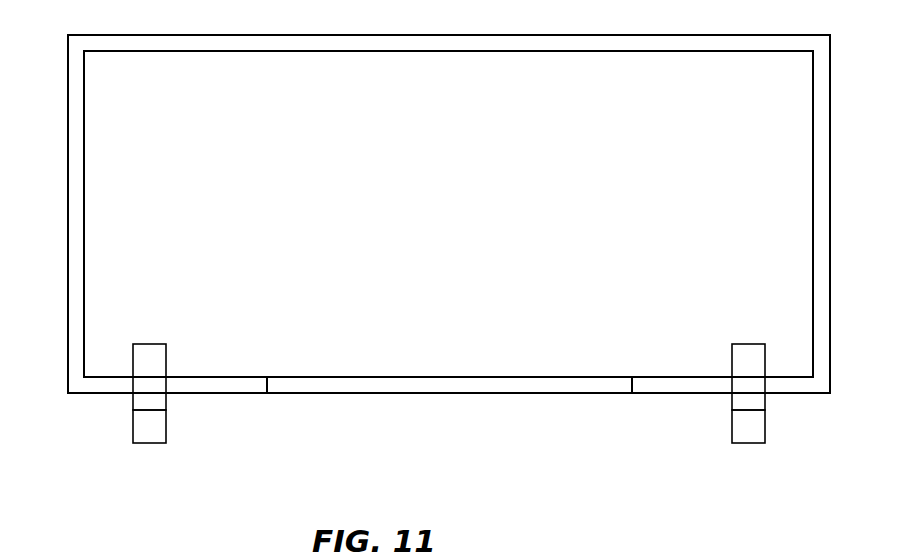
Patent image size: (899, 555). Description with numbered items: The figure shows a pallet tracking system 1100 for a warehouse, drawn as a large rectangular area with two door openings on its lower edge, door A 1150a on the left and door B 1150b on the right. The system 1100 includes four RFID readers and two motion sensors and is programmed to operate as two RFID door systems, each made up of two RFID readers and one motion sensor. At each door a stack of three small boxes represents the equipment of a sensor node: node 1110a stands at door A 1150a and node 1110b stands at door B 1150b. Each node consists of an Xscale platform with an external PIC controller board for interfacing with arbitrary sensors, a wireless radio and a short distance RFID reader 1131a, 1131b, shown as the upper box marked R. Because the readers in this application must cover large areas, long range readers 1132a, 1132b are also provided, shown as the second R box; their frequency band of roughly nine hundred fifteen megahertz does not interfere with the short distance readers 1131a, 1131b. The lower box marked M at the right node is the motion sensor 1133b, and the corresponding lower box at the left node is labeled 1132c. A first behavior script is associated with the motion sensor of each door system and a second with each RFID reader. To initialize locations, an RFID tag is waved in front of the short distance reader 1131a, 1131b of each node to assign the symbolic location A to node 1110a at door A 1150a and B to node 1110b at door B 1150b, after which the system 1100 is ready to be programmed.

The system 1100 is at (437, 245).
The sensor node 1110a is at (112, 413).
The sensor node 1110b is at (788, 416).
The short distance RFID reader 1131a is at (150, 344).
The short distance RFID reader 1131b is at (748, 344).
The long range RFID reader 1132a is at (166, 393).
The long range RFID reader 1132b is at (732, 393).
The motor (door A) 1132c is at (166, 427).
The motion sensor 1133b is at (732, 427).
The door A 1150a is at (210, 315).
The door B 1150b is at (689, 315).